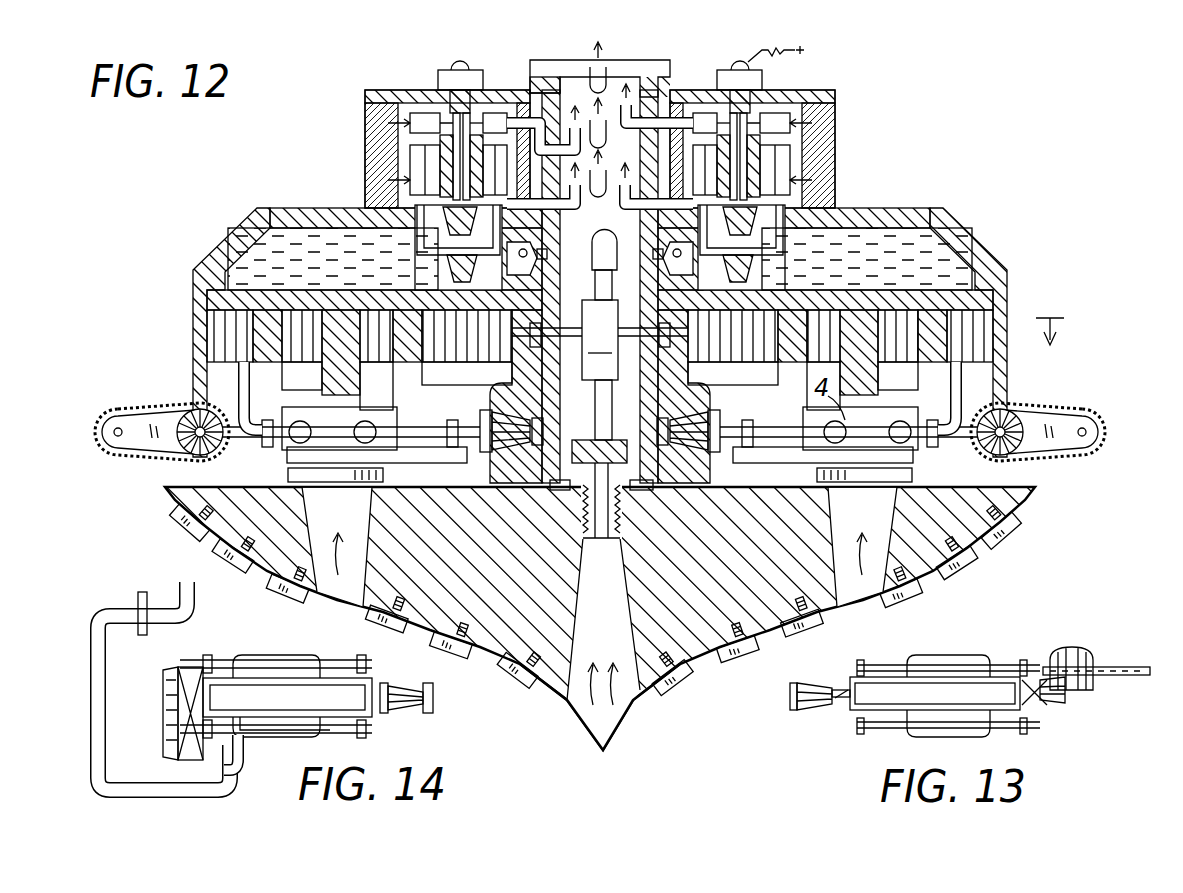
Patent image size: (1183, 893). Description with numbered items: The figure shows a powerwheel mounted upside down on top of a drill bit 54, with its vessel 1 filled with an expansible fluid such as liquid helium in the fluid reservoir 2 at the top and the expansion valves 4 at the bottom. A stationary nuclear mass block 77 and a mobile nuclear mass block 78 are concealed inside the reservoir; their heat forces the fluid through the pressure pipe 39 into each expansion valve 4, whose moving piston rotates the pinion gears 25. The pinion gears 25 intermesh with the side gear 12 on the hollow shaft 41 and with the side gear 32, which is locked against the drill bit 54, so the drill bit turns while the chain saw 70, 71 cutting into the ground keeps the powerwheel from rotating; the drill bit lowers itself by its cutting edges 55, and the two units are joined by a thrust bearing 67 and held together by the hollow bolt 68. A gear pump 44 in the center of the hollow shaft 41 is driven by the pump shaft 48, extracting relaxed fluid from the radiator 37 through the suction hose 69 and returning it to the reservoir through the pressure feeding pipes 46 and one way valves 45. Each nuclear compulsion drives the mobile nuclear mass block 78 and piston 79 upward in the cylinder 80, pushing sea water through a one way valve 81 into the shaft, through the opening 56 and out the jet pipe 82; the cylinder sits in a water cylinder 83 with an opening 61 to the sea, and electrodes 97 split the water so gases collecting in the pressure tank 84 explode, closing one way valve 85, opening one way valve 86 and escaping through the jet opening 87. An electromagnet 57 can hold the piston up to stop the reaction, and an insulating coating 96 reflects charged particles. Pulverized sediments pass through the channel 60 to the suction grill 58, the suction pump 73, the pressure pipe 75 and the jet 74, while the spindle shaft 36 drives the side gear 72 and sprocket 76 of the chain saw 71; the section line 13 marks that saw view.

In FIG. 12, the vessel 1 is at (198, 278).
In FIG. 12, the fluid reservoir 2 is at (286, 242).
In FIG. 12, the expansion valve 4 is at (322, 420).
In FIG. 14, the expansion valve 4 is at (314, 705).
In FIG. 13, the expansion valve 4 is at (939, 705).
In FIG. 12, the side gear 12 is at (507, 398).
In FIG. 12, the section line 13 is at (1048, 313).
In FIG. 12, the pinion gear 25 is at (688, 432).
In FIG. 12, the side gear 32 is at (490, 470).
In FIG. 13, the spindle shaft 36 is at (850, 716).
In FIG. 12, the radiator 37 is at (222, 330).
In FIG. 12, the pressure pipe 39 is at (342, 330).
In FIG. 12, the hollow shaft 41 is at (585, 63).
In FIG. 12, the gear pump 44 is at (600, 340).
In FIG. 12, the one way valve 45 is at (523, 262).
In FIG. 12, the pressure feeding pipe 46 is at (598, 240).
In FIG. 12, the pump shaft 48 is at (600, 400).
In FIG. 12, the drill bit 54 is at (735, 560).
In FIG. 12, the cutting edges 55 is at (360, 632).
In FIG. 12, the opening 56 is at (380, 128).
In FIG. 12, the electromagnet 57 is at (762, 82).
In FIG. 12, the suction grill 58 is at (290, 478).
In FIG. 14, the suction grill 58 is at (296, 750).
In FIG. 12, the channel 60 is at (348, 516).
In FIG. 12, the opening 61 is at (410, 172).
In FIG. 12, the thrust bearing 67 is at (648, 488).
In FIG. 12, the hollow bolt 68 is at (583, 505).
In FIG. 12, the suction hose 69 is at (540, 347).
In FIG. 12, the chain saw 70 is at (165, 420).
In FIG. 12, the chain saw 71 is at (100, 428).
In FIG. 13, the chain saw 71 is at (1120, 668).
In FIG. 13, the side gear 72 is at (1068, 696).
In FIG. 14, the suction pump 73 is at (246, 752).
In FIG. 12, the jet 74 is at (606, 126).
In FIG. 14, the jet 74 is at (196, 608).
In FIG. 14, the pressure pipe 75 is at (90, 686).
In FIG. 13, the sprocket 76 is at (1078, 650).
In FIG. 12, the stationary nuclear mass block 77 is at (818, 248).
In FIG. 12, the mobile nuclear mass block 78 is at (447, 232).
In FIG. 12, the piston 79 is at (468, 102).
In FIG. 12, the cylinder 80 is at (438, 80).
In FIG. 12, the one way valve 81 is at (549, 77).
In FIG. 12, the jet pipe 82 is at (678, 112).
In FIG. 12, the water cylinder 83 is at (406, 134).
In FIG. 12, the pressure tank 84 is at (792, 124).
In FIG. 12, the one way valve 85 is at (790, 170).
In FIG. 12, the one way valve 86 is at (705, 183).
In FIG. 12, the jet opening 87 is at (607, 196).
In FIG. 12, the insulating coating 96 is at (400, 96).
In FIG. 12, the electrodes 97 is at (388, 181).